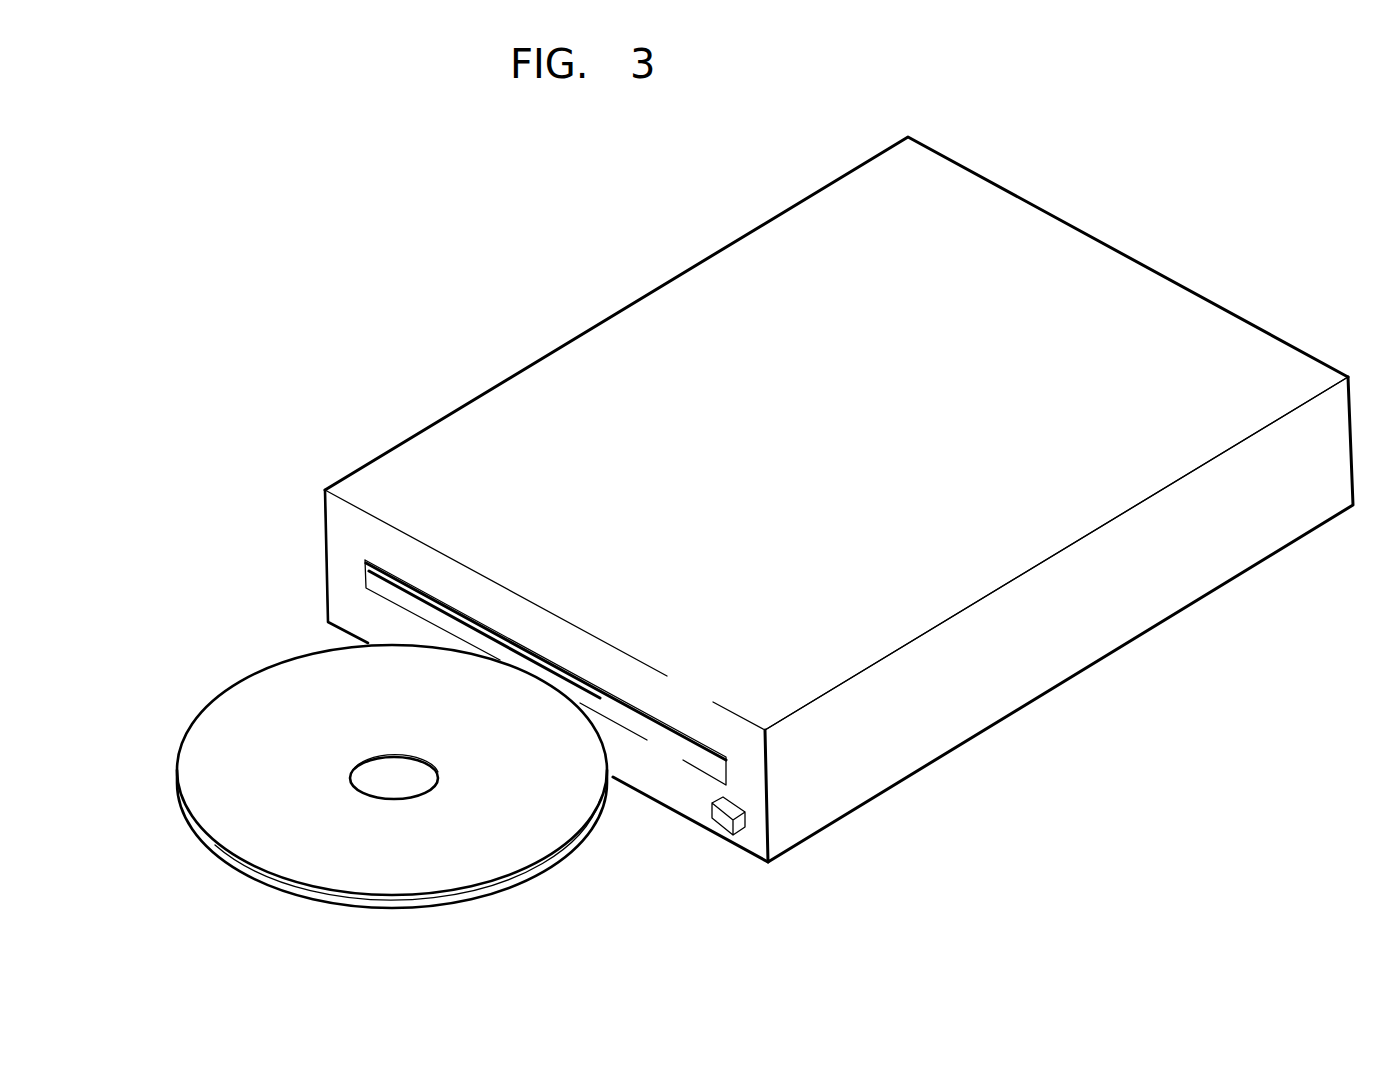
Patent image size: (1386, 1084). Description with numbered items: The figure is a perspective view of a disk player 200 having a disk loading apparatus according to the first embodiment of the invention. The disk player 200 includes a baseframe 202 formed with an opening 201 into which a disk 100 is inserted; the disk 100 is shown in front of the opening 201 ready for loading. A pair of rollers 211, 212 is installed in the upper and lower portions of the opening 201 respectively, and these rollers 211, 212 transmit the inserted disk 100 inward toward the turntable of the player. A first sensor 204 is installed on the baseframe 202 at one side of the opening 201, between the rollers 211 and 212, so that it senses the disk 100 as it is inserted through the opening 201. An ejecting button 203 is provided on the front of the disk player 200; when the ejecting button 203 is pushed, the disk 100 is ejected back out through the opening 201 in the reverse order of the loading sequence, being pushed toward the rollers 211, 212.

The disk 100 is at (213, 741).
The disk player 200 is at (1115, 192).
The opening 201 is at (648, 787).
The baseframe 202 is at (608, 386).
The ejecting button 203 is at (723, 820).
The first sensor 204 is at (373, 585).
The roller 211 is at (366, 572).
The roller 212 is at (417, 605).